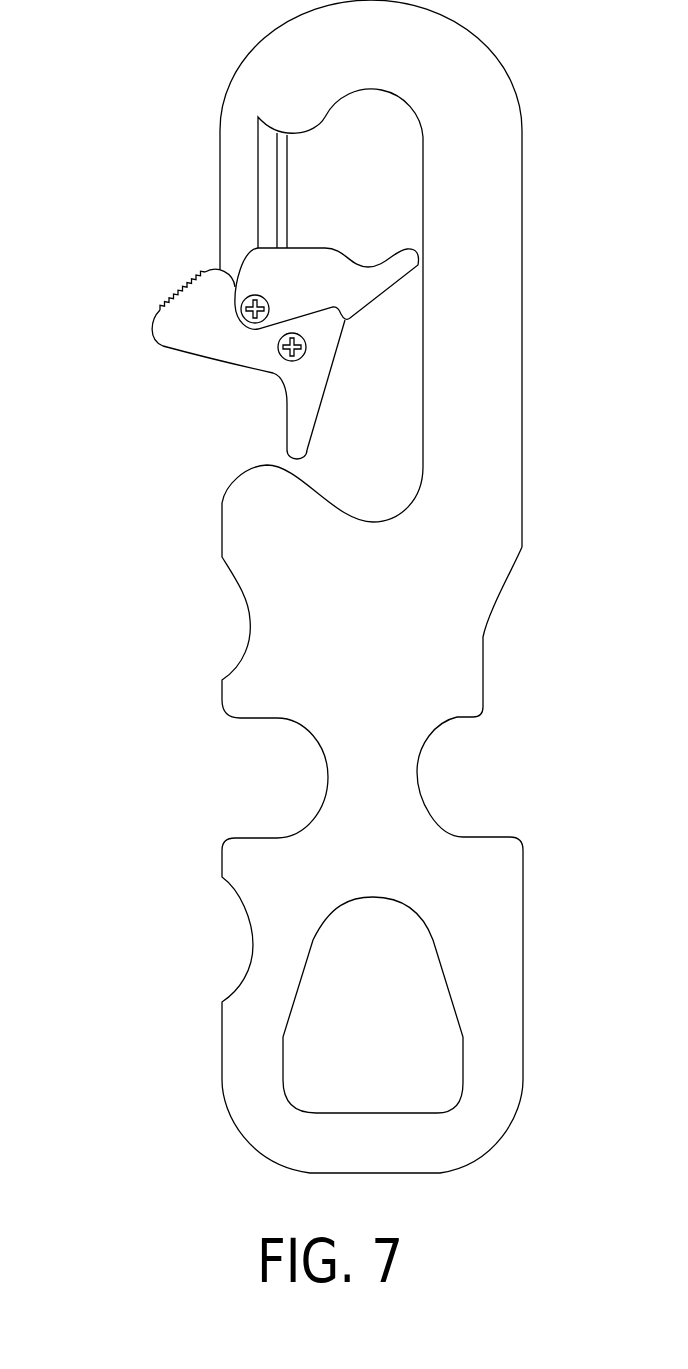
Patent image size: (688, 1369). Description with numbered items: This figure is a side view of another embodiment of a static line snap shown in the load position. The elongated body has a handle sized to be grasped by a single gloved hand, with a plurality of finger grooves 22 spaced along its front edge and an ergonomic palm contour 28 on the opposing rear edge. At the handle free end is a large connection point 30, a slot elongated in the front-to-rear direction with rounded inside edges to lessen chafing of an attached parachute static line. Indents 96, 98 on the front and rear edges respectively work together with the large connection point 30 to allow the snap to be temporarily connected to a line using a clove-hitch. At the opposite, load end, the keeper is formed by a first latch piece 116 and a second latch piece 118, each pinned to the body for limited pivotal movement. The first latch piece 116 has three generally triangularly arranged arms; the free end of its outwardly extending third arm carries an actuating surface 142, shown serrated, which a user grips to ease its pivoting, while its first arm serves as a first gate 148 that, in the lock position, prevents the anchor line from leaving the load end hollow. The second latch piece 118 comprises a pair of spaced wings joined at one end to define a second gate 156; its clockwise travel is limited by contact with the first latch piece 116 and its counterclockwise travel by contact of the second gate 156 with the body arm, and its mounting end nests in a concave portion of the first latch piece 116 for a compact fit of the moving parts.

The finger grooves 22 is at (247, 617).
The ergonomic palm contour 28 is at (483, 633).
The connection point 30 is at (405, 1053).
The indent 96 is at (328, 780).
The indent 98 is at (418, 770).
The first latch piece 116 is at (191, 368).
The second latch piece 118 is at (327, 321).
The actuating surface 142 is at (180, 293).
The first gate 148 is at (295, 442).
The second gate 156 is at (387, 273).